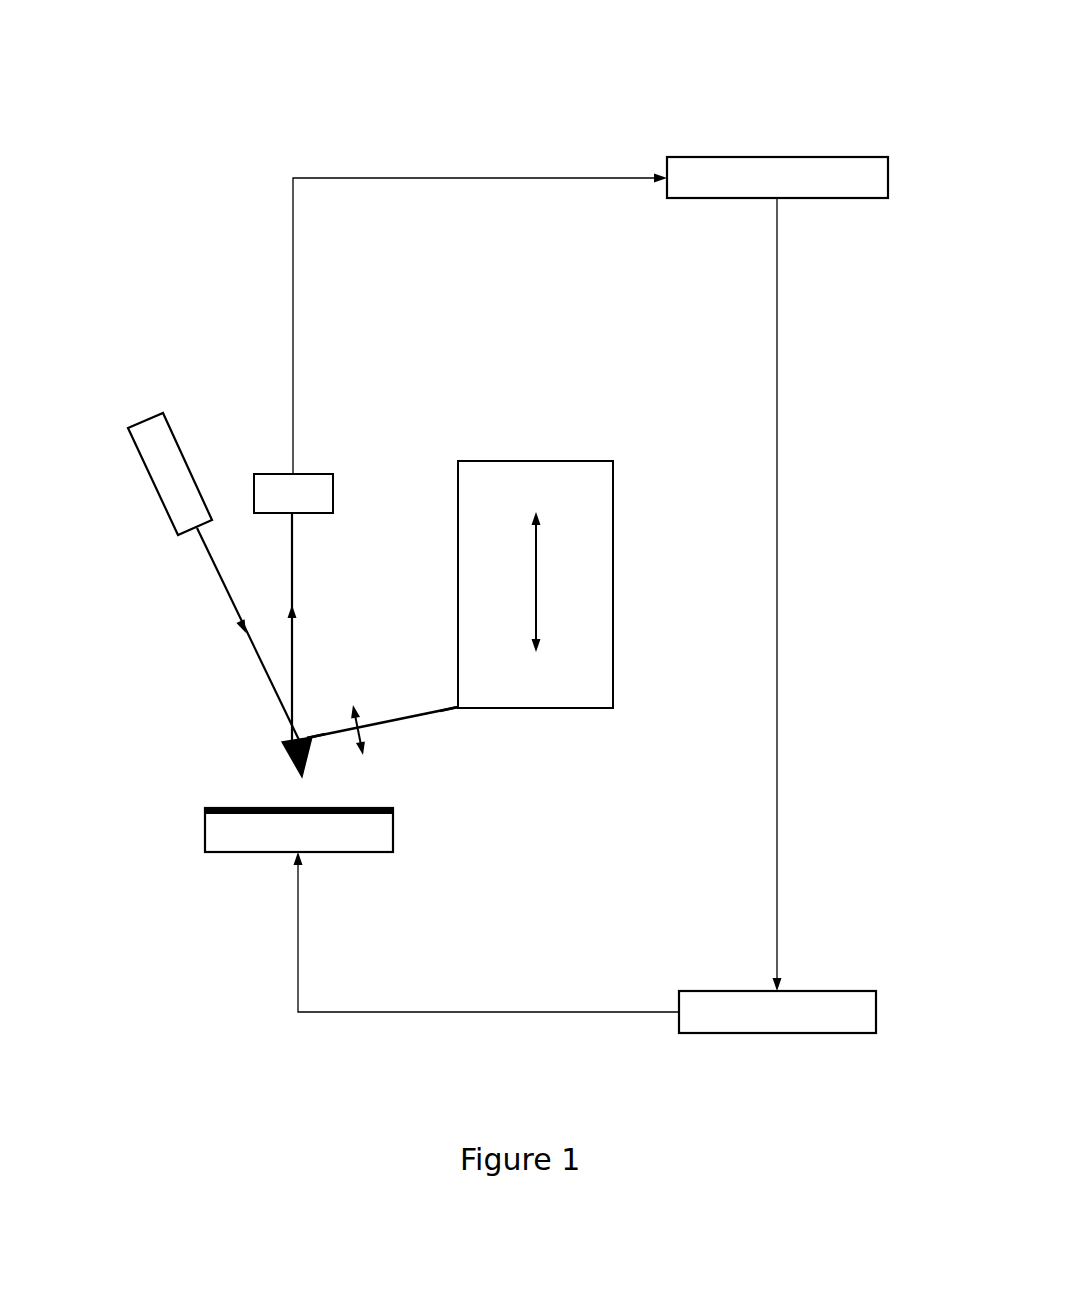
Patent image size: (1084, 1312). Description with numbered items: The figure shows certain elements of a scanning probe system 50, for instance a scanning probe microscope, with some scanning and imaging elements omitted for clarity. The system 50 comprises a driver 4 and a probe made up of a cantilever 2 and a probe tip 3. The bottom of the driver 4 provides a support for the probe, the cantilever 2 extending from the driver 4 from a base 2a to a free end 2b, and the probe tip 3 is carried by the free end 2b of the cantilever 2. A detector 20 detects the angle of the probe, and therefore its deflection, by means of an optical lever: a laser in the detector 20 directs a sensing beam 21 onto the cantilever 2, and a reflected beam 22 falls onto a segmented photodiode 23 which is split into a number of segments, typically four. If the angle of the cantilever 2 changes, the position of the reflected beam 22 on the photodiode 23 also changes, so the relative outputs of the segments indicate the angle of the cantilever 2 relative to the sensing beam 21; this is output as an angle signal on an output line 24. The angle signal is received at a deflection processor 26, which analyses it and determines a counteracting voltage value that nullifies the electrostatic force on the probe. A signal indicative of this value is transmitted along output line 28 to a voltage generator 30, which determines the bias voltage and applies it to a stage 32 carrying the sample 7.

The scanning probe system 50 is at (553, 140).
The deflection processor 26 is at (777, 157).
The output line 28 is at (777, 705).
The voltage generator 30 is at (855, 1033).
The output line 24 is at (333, 177).
The segmented photodiode 23 is at (266, 472).
The detector 20 is at (150, 564).
The sensing beam 21 is at (225, 597).
The reflected beam 22 is at (292, 653).
The driver 4 is at (615, 525).
The cantilever 2 is at (400, 718).
The base 2a is at (460, 707).
The free end 2b is at (322, 733).
The probe tip 3 is at (290, 758).
The sample 7 is at (205, 808).
The stage 32 is at (205, 830).